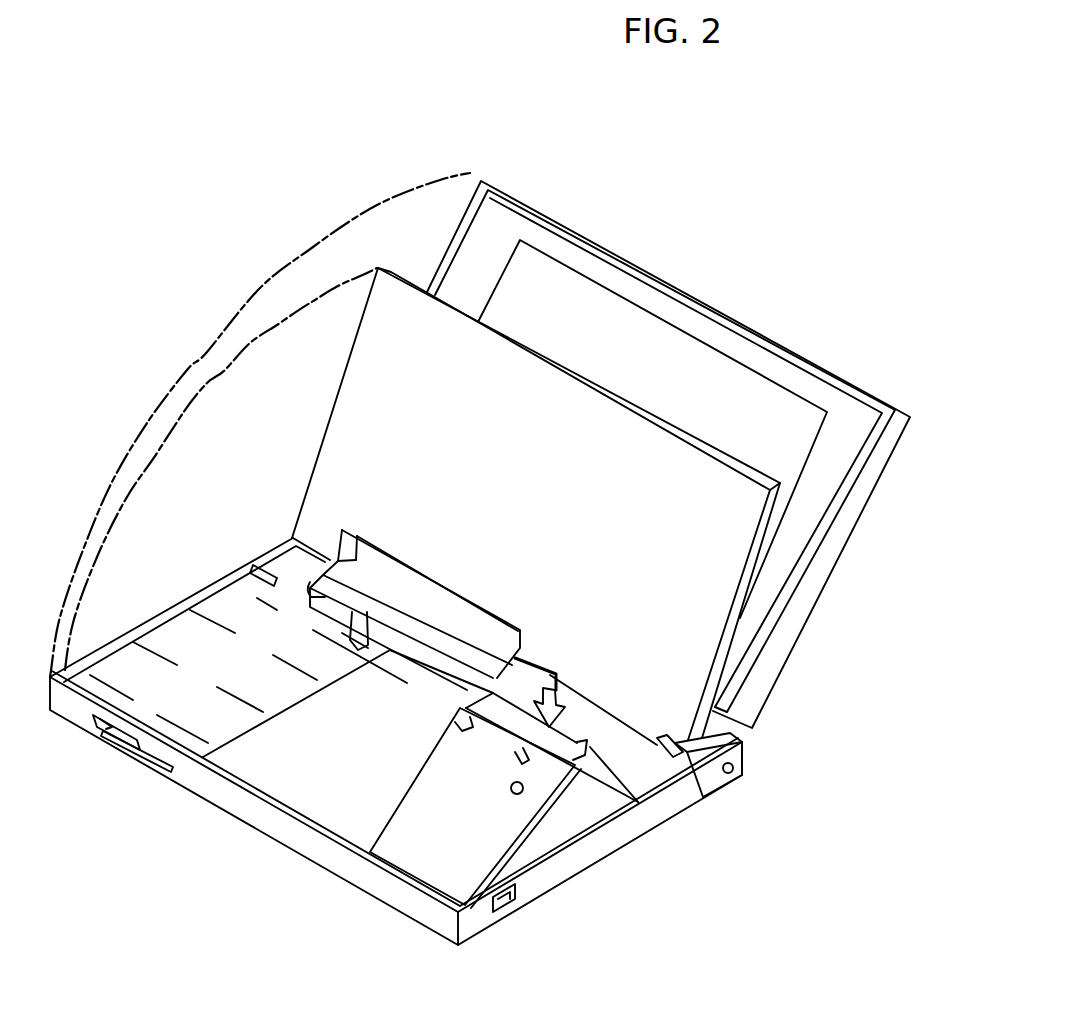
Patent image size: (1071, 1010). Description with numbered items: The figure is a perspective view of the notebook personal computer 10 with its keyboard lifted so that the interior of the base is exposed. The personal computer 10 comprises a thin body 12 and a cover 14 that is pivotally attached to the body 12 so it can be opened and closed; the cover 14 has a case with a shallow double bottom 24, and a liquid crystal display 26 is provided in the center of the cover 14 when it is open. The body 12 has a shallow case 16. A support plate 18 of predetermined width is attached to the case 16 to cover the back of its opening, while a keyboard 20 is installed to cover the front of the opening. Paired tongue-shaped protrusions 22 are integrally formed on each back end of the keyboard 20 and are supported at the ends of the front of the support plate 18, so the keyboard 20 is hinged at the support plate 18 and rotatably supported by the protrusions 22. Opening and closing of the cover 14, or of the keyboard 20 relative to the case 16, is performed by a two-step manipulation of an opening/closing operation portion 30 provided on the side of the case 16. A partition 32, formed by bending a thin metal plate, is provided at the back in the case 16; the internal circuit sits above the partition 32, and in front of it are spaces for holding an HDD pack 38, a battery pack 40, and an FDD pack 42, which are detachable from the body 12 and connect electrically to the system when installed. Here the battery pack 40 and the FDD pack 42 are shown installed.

The personal computer 10 is at (722, 228).
The body 12 is at (265, 869).
The cover 14 is at (827, 622).
The case 16 is at (212, 785).
The support plate 18 is at (742, 752).
The keyboard 20 is at (352, 447).
The protrusions 22 is at (322, 563).
The case 24 is at (842, 537).
The liquid crystal display 26 is at (568, 320).
The opening/closing operation portion 30 is at (505, 902).
The partition 32 is at (630, 763).
The HDD pack 38 is at (442, 855).
The battery pack 40 is at (317, 797).
The FDD pack 42 is at (127, 665).